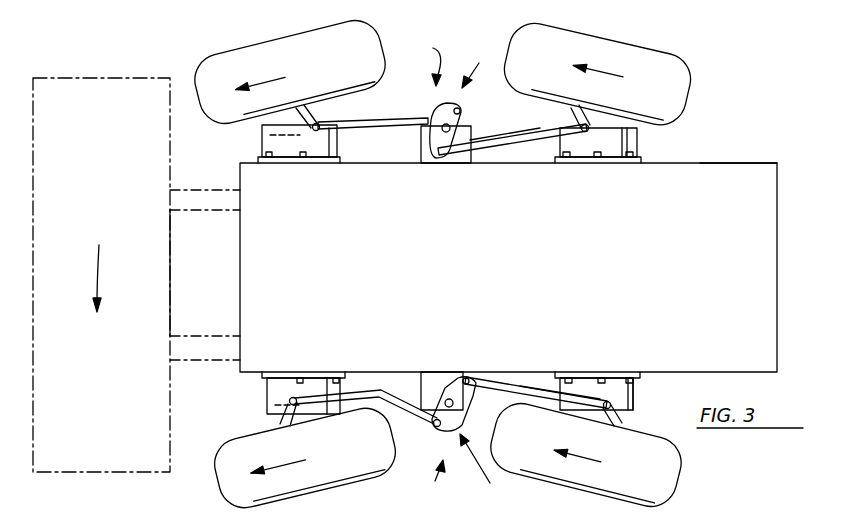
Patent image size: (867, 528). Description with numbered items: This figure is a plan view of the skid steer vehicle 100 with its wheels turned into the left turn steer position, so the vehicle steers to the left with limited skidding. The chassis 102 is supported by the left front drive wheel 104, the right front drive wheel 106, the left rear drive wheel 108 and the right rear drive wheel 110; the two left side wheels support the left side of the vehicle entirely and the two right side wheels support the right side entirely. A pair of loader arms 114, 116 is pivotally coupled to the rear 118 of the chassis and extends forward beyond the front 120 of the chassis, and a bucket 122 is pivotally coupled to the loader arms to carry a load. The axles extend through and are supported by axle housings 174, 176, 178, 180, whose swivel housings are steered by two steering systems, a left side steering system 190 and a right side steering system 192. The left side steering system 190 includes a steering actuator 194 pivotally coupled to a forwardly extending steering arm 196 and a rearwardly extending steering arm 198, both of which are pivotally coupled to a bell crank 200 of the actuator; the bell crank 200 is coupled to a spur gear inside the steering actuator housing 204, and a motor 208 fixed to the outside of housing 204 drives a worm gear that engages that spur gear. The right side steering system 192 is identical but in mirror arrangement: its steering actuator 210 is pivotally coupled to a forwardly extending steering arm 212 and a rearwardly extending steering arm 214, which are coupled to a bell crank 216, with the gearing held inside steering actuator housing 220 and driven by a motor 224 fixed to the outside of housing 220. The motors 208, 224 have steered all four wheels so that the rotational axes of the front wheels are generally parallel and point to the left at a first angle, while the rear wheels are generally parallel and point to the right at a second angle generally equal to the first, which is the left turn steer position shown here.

The skid steer vehicle 100 is at (497, 5).
The chassis 102 is at (462, 274).
The left front drive wheel 104 is at (218, 498).
The right front drive wheel 106 is at (272, 40).
The left rear drive wheel 108 is at (680, 488).
The right rear drive wheel 110 is at (658, 53).
The loader arm 114 is at (221, 336).
The loader arm 116 is at (205, 212).
The rear of the chassis 118 is at (706, 160).
The front of the chassis 120 is at (240, 274).
The bucket 122 is at (99, 77).
The axle housing 174 is at (270, 410).
The axle housing 176 is at (262, 142).
The axle housing 178 is at (634, 404).
The right rear axle housing 180 is at (633, 142).
The left side steering system 190 is at (430, 483).
The right side steering system 192 is at (418, 62).
The steering actuator 194 is at (489, 470).
The forwardly extending steering arm 196 is at (380, 392).
The rearwardly extending steering arm 198 is at (535, 388).
The bell crank 200 is at (458, 378).
The steering actuator housing 204 is at (420, 372).
The motor 208 is at (507, 372).
The steering actuator 210 is at (480, 65).
The forwardly extending steering arm 212 is at (396, 104).
The rearwardly extending steering arm 214 is at (510, 158).
The bell crank 216 is at (421, 140).
The steering actuator housing 220 is at (467, 118).
The motor 224 is at (482, 138).